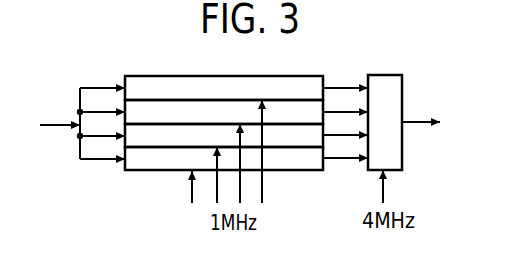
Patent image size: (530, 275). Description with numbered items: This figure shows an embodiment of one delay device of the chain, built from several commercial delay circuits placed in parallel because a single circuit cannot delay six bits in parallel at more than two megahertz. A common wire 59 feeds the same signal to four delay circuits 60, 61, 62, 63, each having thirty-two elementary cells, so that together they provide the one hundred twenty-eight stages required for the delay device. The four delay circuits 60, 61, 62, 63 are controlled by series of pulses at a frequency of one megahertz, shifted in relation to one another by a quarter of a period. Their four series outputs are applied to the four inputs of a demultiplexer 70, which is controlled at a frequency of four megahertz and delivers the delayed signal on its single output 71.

The wire 59 is at (50, 124).
The delay circuit 60 is at (147, 90).
The delay circuit 61 is at (173, 113).
The delay circuit 62 is at (146, 138).
The delay circuit 63 is at (173, 155).
The demultiplexer 70 is at (390, 143).
The output 71 is at (420, 118).